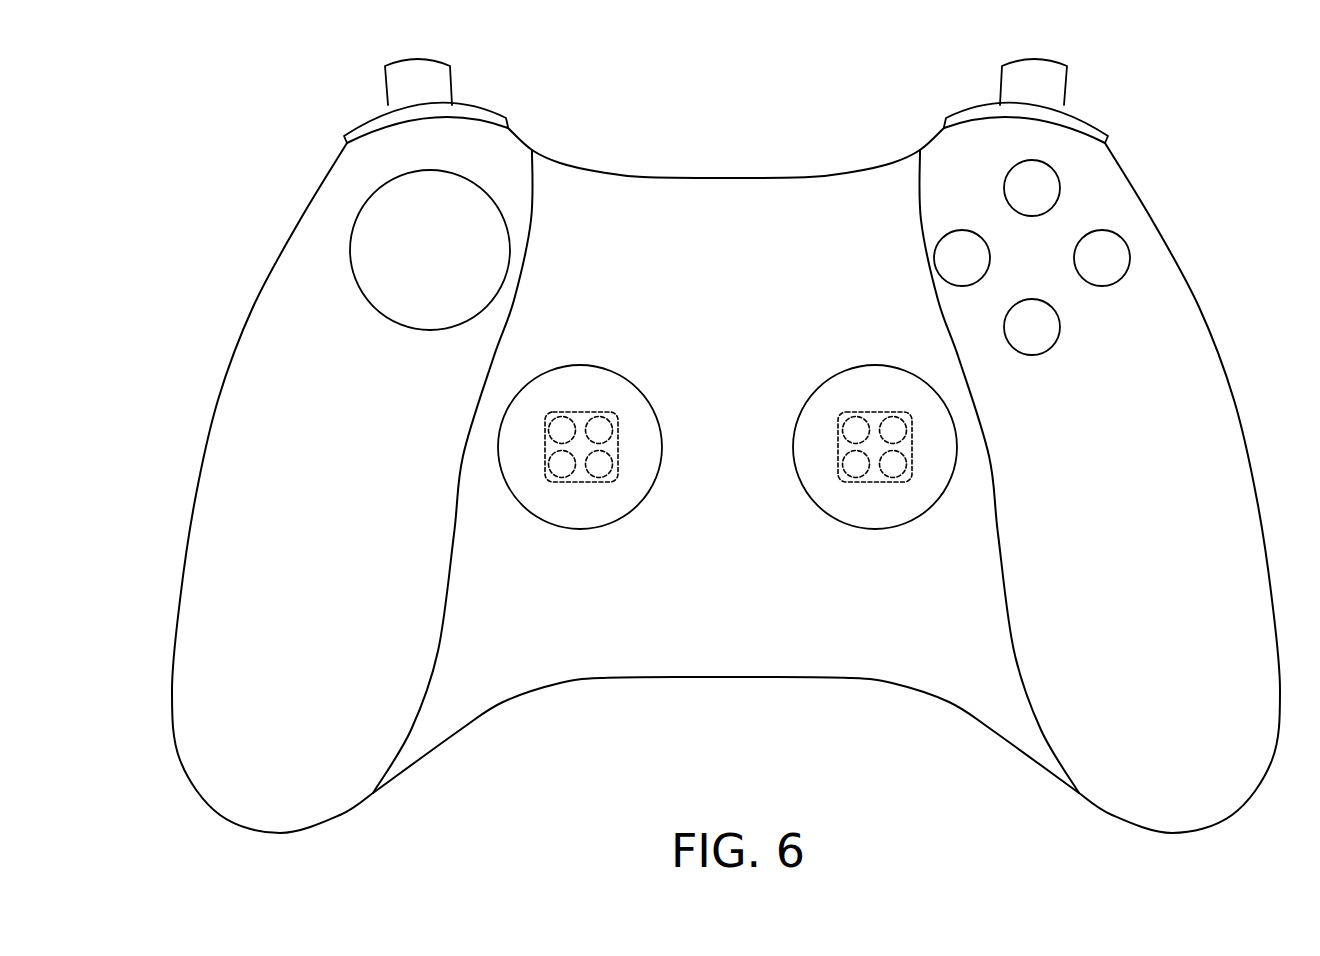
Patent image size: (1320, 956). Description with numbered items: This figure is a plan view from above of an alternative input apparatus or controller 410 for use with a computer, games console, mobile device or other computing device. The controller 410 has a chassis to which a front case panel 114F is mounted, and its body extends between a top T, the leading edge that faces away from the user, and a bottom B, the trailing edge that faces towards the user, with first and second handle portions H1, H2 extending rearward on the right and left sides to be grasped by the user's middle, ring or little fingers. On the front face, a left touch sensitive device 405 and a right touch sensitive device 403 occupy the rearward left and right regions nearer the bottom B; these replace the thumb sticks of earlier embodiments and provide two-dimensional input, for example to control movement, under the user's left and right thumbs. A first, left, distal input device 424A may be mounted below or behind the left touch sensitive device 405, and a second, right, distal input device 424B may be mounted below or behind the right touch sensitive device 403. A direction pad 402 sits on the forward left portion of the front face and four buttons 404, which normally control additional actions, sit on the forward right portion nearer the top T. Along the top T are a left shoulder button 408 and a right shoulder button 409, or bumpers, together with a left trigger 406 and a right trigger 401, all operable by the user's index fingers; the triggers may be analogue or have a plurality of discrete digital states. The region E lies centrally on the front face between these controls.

The controller 410 is at (208, 95).
The right trigger 401 is at (1028, 72).
The left trigger 406 is at (418, 65).
The left shoulder button 408 is at (367, 133).
The right shoulder button 409 is at (972, 122).
The direction pad 402 is at (351, 235).
The buttons 404 is at (975, 247).
The left touch sensitive device 405 is at (533, 495).
The right touch sensitive device 403 is at (860, 503).
The first distal input device 424A is at (580, 411).
The second distal input device 424B is at (876, 411).
The top T is at (707, 176).
The bottom B is at (710, 680).
The front face region E is at (723, 341).
The first handle portion H1 is at (1140, 734).
The second handle portion H2 is at (265, 736).
The front case panel 114F is at (695, 594).